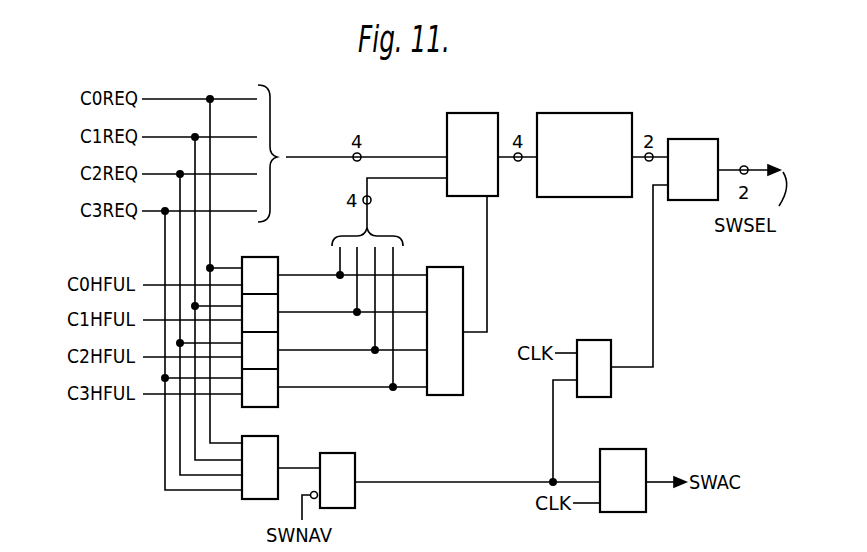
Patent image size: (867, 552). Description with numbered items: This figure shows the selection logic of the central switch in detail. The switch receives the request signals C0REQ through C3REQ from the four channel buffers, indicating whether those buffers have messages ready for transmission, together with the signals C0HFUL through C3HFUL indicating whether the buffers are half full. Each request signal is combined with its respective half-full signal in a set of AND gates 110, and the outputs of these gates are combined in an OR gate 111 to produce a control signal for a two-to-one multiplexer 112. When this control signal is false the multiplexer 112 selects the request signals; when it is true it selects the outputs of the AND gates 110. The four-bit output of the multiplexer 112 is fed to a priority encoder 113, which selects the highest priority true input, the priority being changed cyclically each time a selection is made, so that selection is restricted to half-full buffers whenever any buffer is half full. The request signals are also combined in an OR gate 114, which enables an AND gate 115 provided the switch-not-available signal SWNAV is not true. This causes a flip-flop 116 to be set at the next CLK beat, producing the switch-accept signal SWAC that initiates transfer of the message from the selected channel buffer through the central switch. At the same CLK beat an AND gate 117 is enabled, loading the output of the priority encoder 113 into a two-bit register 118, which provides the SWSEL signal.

The AND gates 110 is at (271, 261).
The OR gate 111 is at (442, 397).
The 2:1 multiplexer 112 is at (480, 113).
The priority encoder 113 is at (596, 113).
The OR gate 114 is at (255, 499).
The AND gate 115 is at (343, 453).
The flip-flop 116 is at (629, 449).
The AND gate 117 is at (588, 344).
The 2-bit register 118 is at (693, 139).